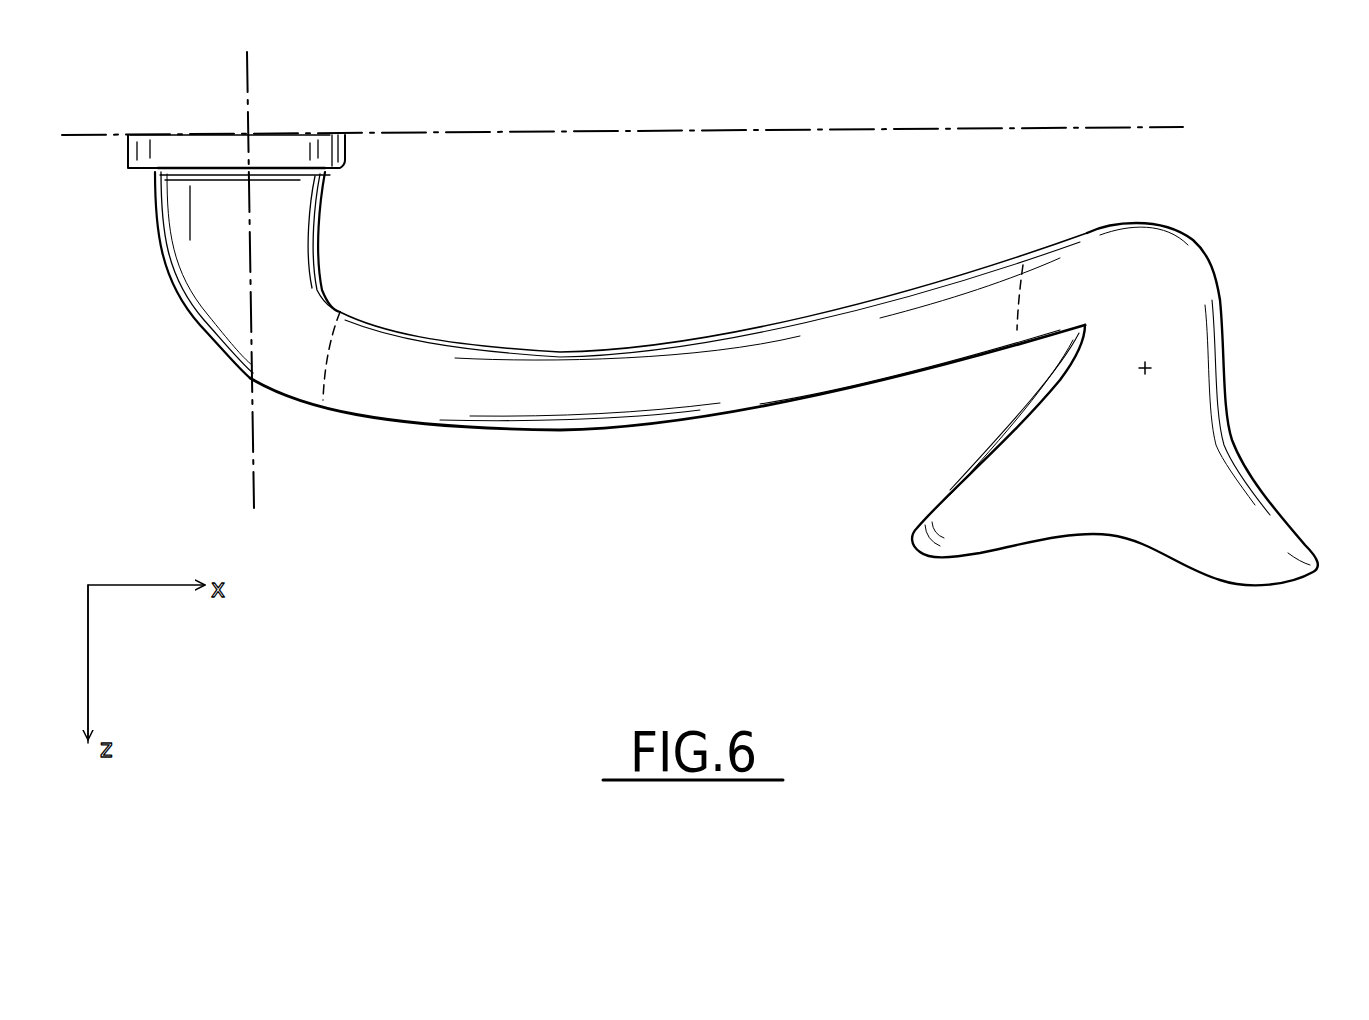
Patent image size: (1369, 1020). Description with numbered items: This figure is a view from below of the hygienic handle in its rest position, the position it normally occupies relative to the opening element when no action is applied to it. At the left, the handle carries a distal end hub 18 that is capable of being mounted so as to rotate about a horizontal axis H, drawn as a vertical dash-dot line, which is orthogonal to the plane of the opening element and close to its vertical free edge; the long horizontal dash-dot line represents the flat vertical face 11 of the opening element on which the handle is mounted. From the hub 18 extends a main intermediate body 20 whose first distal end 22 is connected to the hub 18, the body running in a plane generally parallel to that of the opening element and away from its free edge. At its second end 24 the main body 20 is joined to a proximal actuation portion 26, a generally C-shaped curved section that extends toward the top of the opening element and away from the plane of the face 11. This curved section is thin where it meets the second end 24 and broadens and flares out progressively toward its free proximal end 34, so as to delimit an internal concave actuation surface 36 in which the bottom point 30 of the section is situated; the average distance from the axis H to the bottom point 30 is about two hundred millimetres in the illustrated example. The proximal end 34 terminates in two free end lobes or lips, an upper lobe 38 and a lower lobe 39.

The flat vertical face 11 is at (637, 130).
The horizontal axis H is at (250, 425).
The distal end hub 18 is at (160, 258).
The main intermediate body 20 is at (668, 428).
The first distal end 22 is at (327, 377).
The second end 24 is at (1013, 295).
The proximal actuation portion 26 is at (1228, 328).
The bottom point 30 is at (1150, 370).
The free proximal end 34 is at (1098, 535).
The internal concave actuation surface 36 is at (1100, 400).
The upper lobe 38 is at (1310, 566).
The lower lobe 39 is at (985, 507).